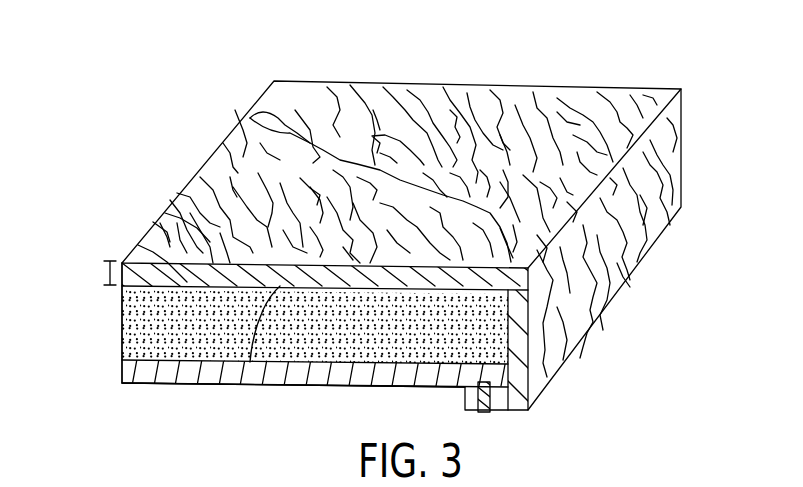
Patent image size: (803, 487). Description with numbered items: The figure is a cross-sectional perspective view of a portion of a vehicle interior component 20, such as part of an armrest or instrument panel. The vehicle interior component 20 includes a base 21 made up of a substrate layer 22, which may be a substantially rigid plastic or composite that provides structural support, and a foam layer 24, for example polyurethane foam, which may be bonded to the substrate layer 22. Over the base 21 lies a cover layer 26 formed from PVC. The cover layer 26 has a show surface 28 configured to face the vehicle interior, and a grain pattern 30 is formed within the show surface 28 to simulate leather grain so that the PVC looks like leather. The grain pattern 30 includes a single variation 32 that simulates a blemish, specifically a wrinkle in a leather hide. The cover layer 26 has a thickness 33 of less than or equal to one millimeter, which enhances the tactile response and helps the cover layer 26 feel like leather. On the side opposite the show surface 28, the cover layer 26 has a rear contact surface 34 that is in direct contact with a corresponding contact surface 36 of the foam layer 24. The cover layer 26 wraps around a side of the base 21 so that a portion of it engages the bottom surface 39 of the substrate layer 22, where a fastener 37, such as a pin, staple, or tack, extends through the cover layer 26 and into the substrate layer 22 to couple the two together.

The vehicle interior component 20 is at (522, 46).
The base 21 is at (108, 346).
The substrate layer 22 is at (170, 372).
The foam layer 24 is at (140, 326).
The cover layer 26 is at (138, 245).
The show surface 28 is at (545, 90).
The grain pattern 30 is at (231, 186).
The variation 32 is at (272, 122).
The thickness 33 is at (106, 272).
The contact surface 34 is at (250, 362).
The contact surface 36 is at (164, 213).
The fastener 37 is at (483, 412).
The bottom surface 39 is at (360, 381).